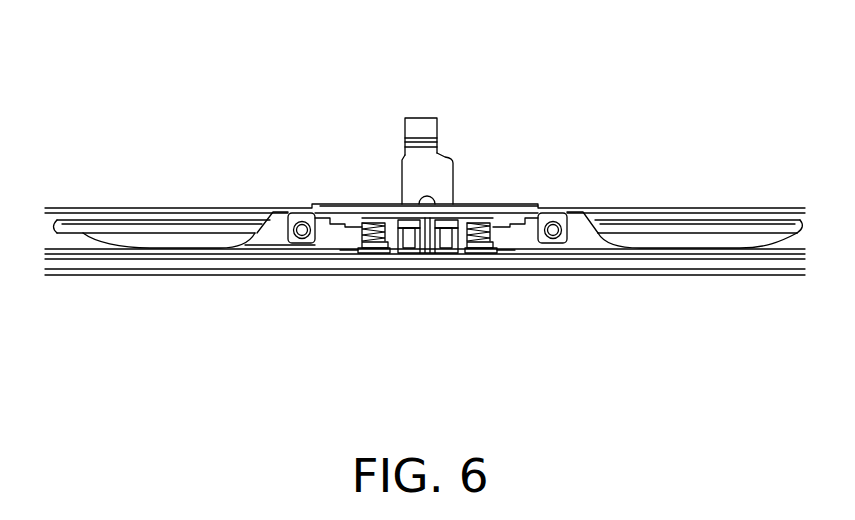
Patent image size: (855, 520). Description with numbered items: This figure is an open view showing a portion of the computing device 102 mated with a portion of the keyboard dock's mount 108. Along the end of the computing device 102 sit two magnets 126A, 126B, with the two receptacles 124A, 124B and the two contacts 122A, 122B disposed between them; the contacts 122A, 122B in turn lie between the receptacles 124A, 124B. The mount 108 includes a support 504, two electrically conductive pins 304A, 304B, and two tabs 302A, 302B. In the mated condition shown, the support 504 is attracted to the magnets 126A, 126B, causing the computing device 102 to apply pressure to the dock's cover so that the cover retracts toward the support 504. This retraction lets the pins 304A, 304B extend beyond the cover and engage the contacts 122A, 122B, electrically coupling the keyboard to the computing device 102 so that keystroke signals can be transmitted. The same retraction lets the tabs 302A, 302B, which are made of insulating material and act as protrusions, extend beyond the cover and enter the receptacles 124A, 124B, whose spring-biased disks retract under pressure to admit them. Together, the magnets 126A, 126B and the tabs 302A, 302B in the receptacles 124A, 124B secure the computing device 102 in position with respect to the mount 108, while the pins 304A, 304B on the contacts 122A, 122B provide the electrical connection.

The computing device 102 is at (192, 104).
The mount 108 is at (217, 270).
The contact 122A is at (408, 228).
The contact 122B is at (447, 228).
The receptacle 124A is at (360, 241).
The receptacle 124B is at (493, 241).
The magnet 126A is at (83, 237).
The magnet 126B is at (717, 235).
The tab 302A is at (373, 255).
The tab 302B is at (488, 258).
The electrically conductive pin 304A is at (407, 258).
The electrically conductive pin 304B is at (449, 258).
The support 504 is at (656, 270).